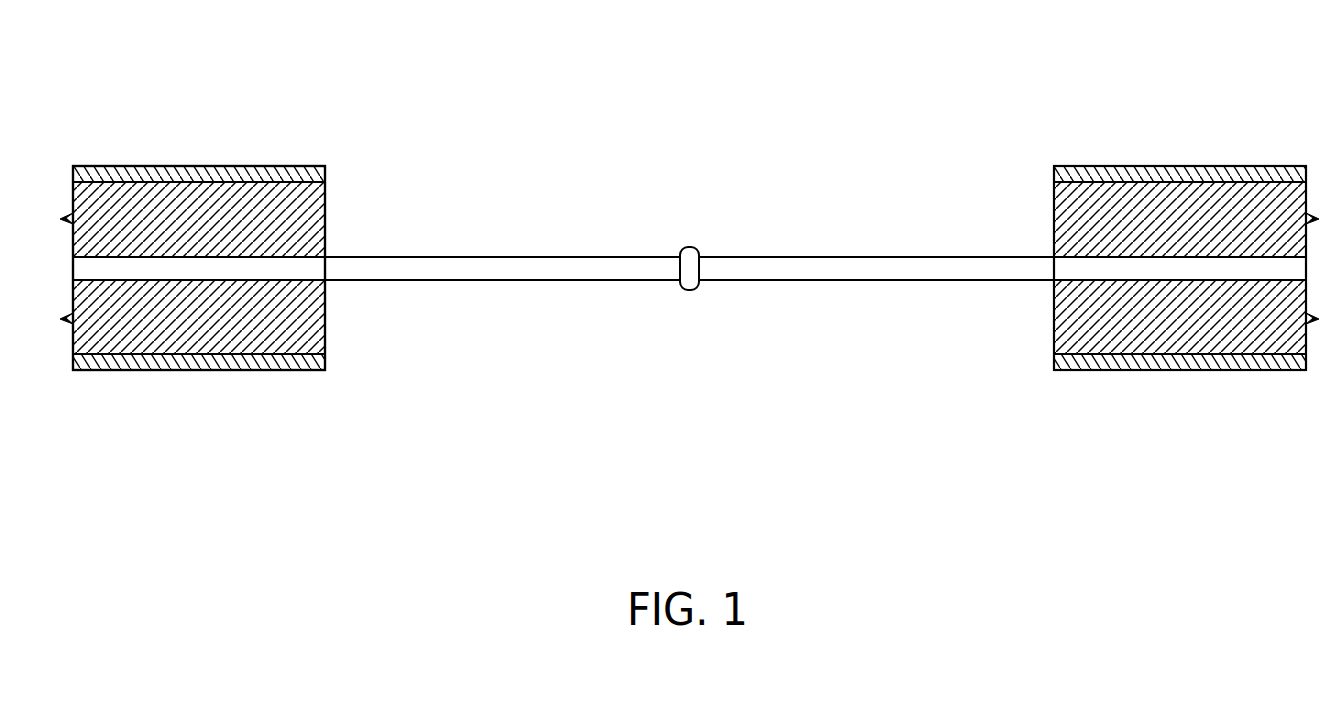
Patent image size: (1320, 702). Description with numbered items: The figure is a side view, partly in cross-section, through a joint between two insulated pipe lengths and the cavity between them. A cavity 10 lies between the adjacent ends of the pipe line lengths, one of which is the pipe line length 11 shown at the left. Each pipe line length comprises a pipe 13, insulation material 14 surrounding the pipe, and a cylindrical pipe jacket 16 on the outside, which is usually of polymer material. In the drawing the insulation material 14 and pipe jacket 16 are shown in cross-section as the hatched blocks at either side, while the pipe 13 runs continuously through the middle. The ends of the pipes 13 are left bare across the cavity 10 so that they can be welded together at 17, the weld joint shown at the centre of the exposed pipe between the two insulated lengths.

The cavity 10 is at (632, 190).
The pipe line length 11 is at (215, 148).
The pipe 13 is at (472, 267).
The insulation material 14 is at (313, 223).
The cylindrical pipe jacket 16 is at (292, 166).
The weld 17 is at (692, 247).